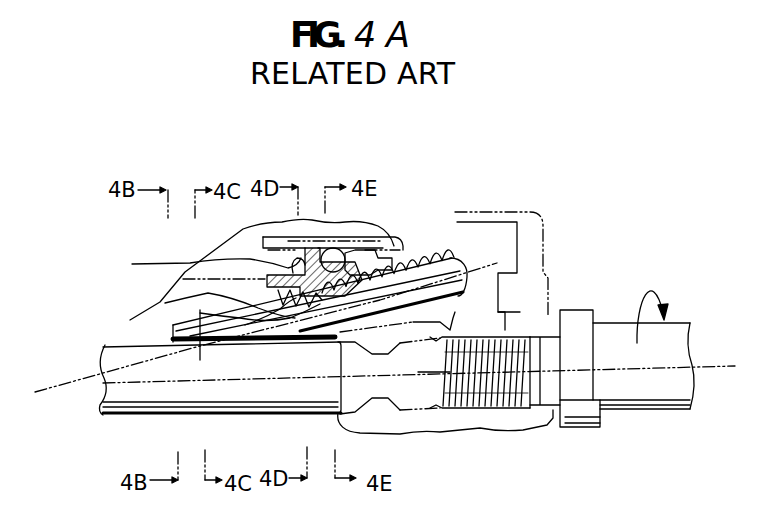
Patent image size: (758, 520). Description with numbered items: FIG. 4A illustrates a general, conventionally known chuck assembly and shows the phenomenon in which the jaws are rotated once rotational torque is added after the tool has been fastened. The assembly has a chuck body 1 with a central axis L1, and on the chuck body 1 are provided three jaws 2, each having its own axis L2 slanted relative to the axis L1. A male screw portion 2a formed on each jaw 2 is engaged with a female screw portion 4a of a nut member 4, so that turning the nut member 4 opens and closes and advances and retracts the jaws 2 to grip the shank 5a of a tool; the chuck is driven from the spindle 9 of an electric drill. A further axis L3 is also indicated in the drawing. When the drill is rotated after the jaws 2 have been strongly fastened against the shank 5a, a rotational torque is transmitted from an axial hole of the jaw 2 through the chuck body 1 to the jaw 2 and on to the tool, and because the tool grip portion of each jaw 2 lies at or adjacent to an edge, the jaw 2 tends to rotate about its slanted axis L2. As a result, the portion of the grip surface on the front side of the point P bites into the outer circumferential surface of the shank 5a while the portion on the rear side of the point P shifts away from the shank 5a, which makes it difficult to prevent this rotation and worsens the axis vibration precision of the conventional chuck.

The chuck body 1 is at (130, 318).
The jaw 2 is at (460, 264).
The male screw portion 2a is at (405, 262).
The nut member 4 is at (190, 263).
The female screw portion 4a is at (165, 303).
The shank 5a is at (103, 348).
The spindle 9 is at (586, 312).
The point P is at (202, 348).
The axis of the chuck body L1 is at (425, 372).
The axis of the jaw L2 is at (470, 268).
The inclined axis L3 is at (128, 387).